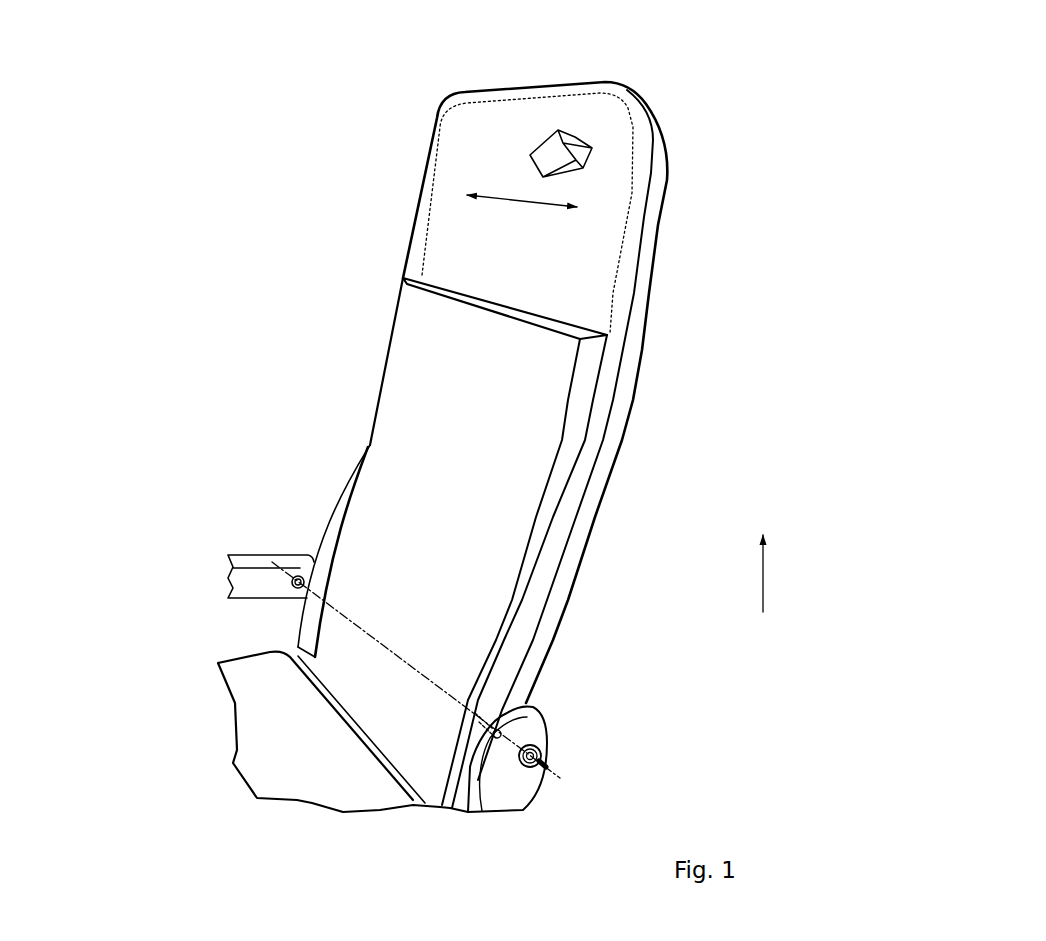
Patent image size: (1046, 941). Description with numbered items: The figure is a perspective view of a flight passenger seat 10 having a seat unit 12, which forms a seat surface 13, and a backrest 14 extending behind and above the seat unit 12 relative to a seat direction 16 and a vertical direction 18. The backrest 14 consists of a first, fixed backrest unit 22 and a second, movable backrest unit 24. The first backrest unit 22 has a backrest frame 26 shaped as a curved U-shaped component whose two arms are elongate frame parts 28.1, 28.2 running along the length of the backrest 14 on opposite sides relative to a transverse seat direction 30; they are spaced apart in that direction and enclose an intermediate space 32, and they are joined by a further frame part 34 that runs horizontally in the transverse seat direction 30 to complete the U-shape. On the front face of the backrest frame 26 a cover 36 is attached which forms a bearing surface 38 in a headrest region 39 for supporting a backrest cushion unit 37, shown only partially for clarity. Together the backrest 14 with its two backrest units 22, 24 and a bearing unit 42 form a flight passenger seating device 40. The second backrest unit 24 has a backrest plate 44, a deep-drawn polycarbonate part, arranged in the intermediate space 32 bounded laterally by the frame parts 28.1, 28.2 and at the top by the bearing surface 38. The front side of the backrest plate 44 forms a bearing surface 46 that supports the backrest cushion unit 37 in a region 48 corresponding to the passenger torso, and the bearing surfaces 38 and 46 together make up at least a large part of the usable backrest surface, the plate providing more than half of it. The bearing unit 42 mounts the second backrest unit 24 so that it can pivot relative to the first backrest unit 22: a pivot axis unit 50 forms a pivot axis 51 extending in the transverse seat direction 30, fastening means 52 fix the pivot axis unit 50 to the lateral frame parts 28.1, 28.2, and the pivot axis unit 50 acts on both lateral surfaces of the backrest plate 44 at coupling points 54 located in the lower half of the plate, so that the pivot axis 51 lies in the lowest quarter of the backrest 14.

The flight passenger seat 10 is at (397, 118).
The seat unit 12 is at (323, 776).
The seat surface 13 is at (367, 783).
The backrest 14 is at (666, 112).
The seat direction 16 is at (333, 725).
The vertical direction 18 is at (763, 582).
The first backrest unit 22 is at (646, 253).
The second backrest unit 24 is at (581, 400).
The backrest frame 26 is at (612, 470).
The frame part 28.1 is at (585, 528).
The frame part 28.2 is at (360, 473).
The transverse seat direction 30 is at (495, 148).
The intermediate space 32 is at (366, 539).
The further frame part 34 is at (520, 200).
The cover 36 is at (462, 157).
The backrest cushion unit 37 is at (563, 143).
The bearing surface 38 is at (455, 242).
The headrest region 39 is at (460, 92).
The flight passenger seating device 40 is at (673, 186).
The bearing unit 42 is at (549, 748).
The backrest plate 44 is at (437, 347).
The bearing surface 46 is at (390, 505).
The region corresponding to the torso 48 is at (419, 387).
The pivot axis unit 50 is at (296, 570).
The pivot axis 51 is at (546, 767).
The fastening means 52 is at (471, 812).
The coupling points 54 is at (478, 720).